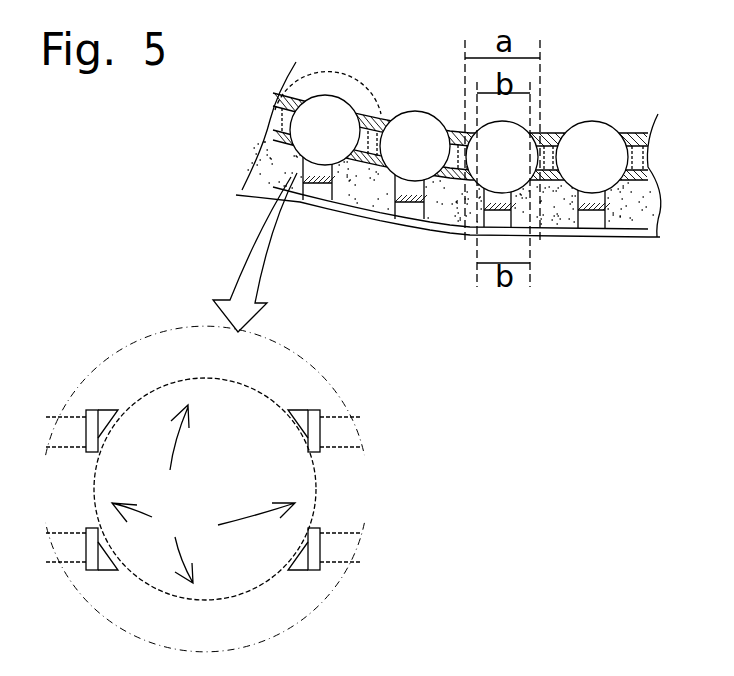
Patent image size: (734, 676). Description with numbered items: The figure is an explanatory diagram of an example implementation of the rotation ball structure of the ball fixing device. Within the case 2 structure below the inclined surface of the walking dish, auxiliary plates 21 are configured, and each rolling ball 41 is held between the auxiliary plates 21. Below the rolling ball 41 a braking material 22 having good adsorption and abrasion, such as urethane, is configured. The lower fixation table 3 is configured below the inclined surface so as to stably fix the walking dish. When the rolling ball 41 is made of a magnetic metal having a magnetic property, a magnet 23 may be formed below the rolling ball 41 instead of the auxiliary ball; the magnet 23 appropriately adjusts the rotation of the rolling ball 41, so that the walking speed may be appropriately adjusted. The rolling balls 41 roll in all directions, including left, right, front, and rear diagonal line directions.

The case 2 is at (632, 133).
The auxiliary plate 21 is at (647, 176).
The braking material 22 is at (648, 208).
The magnet 23 is at (470, 143).
The lower fixation table 3 is at (592, 230).
The rolling ball 41 is at (410, 118).